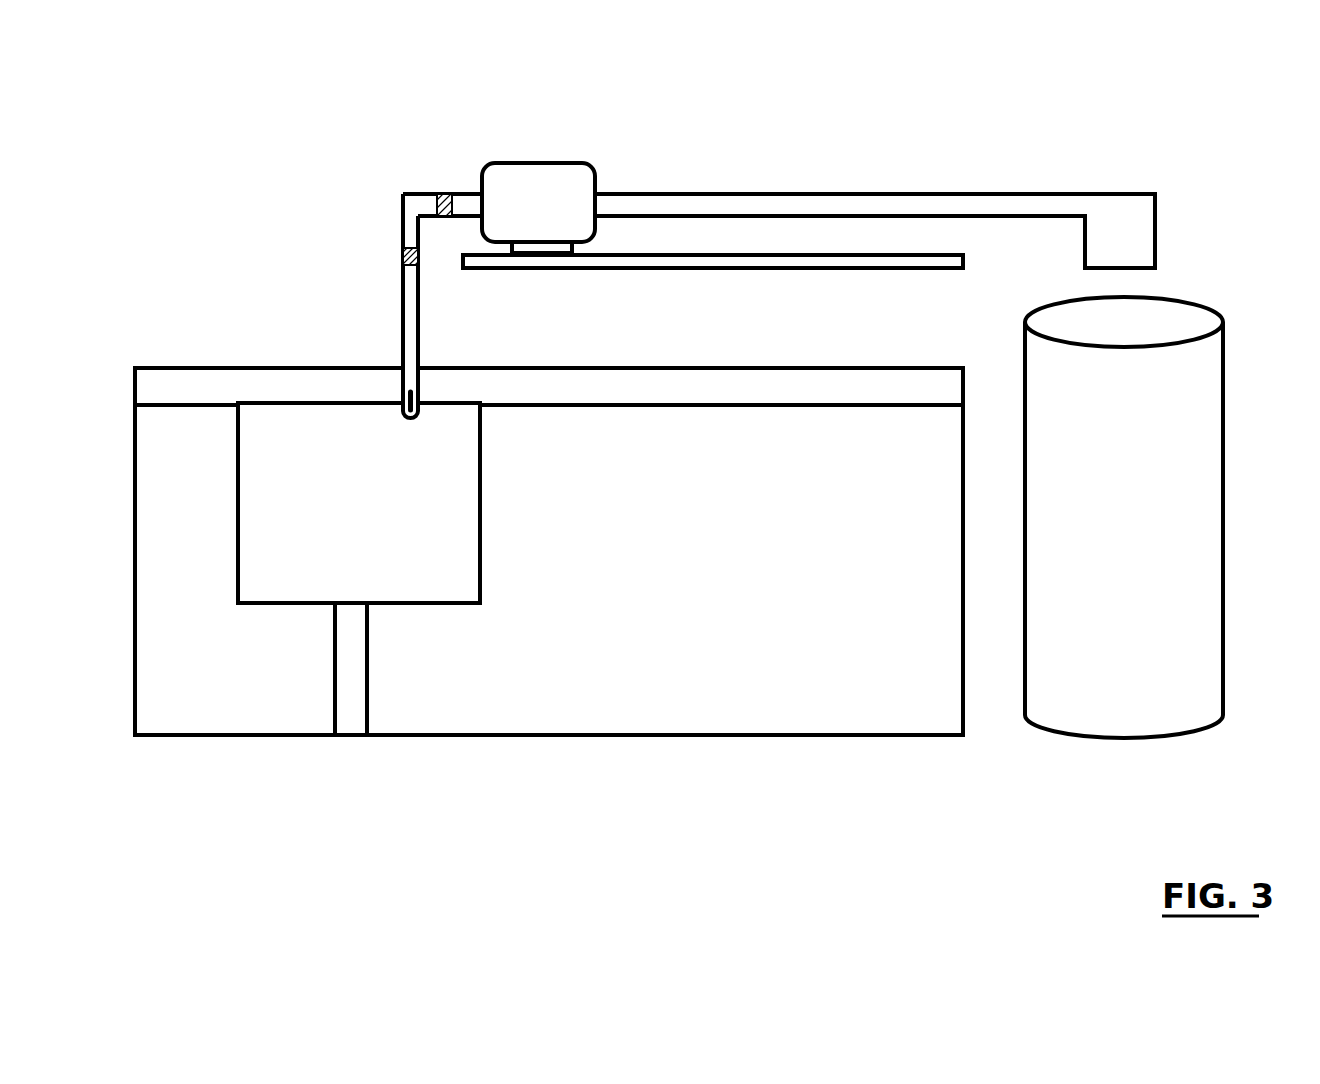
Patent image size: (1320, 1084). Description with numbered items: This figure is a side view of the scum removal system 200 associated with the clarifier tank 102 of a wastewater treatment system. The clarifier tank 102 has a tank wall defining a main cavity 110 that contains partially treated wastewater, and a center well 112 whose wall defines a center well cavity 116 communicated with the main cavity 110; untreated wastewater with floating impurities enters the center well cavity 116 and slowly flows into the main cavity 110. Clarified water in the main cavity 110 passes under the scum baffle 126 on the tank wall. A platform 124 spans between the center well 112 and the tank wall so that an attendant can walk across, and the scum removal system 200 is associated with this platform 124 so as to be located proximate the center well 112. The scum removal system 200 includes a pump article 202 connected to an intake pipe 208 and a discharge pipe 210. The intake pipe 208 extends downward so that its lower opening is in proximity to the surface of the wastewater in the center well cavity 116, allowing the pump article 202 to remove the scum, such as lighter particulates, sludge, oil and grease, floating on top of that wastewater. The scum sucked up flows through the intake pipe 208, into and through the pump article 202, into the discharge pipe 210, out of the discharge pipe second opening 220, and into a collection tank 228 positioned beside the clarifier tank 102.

The clarifier tank 102 is at (549, 595).
The main cavity 110 is at (769, 588).
The center well 112 is at (414, 569).
The center well cavity 116 is at (380, 507).
The platform 124 is at (713, 306).
The scum baffle 126 is at (549, 330).
The scum removal system 200 is at (565, 152).
The pump article 202 is at (559, 218).
The intake pipe 208 is at (355, 306).
The discharge pipe 210 is at (779, 168).
The discharge pipe second opening 220 is at (1168, 231).
The collection tank 228 is at (1146, 545).